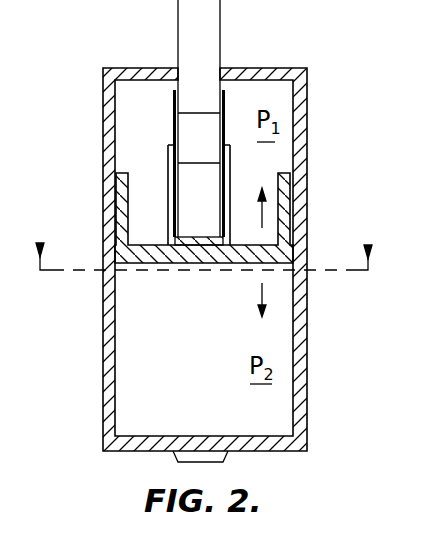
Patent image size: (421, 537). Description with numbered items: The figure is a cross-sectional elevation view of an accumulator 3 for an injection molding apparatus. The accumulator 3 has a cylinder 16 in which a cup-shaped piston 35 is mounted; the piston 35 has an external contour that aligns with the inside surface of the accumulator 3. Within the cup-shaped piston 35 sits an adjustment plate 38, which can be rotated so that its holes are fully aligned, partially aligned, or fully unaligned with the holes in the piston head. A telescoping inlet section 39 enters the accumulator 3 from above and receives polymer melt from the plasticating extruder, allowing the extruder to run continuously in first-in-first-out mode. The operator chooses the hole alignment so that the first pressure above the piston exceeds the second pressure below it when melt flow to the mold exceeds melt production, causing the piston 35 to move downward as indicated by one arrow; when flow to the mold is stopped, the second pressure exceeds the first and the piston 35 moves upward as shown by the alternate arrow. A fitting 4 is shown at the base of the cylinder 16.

The accumulator 3 is at (350, 60).
The mounting bracket 4 is at (228, 459).
The cylinder 16 is at (297, 368).
The cup-shaped piston 35 is at (302, 226).
The adjustment plate 38 is at (197, 233).
The telescoping inlet section 39 is at (202, 88).